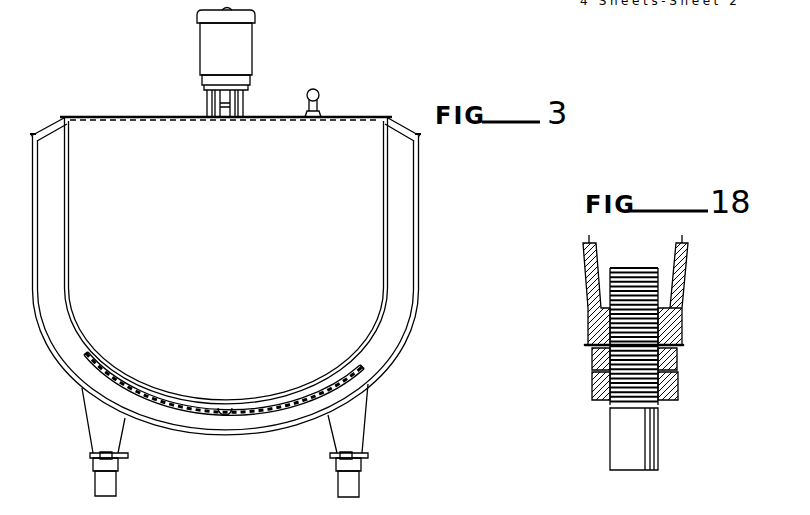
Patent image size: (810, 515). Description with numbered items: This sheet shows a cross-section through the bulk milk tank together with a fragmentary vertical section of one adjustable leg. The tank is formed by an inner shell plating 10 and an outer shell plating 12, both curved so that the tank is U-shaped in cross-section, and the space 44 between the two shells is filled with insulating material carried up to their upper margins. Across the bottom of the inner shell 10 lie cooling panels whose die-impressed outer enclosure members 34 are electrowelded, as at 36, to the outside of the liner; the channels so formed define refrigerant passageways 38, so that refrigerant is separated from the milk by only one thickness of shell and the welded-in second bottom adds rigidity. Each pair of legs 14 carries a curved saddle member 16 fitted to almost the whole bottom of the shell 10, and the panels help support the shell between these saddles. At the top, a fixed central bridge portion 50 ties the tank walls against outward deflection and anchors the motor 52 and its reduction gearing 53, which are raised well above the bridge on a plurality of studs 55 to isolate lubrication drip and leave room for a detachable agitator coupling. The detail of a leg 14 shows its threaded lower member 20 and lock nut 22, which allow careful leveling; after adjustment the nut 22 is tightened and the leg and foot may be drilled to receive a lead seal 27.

In FIG. 3, the inner shell plating 10 is at (382, 301).
In FIG. 3, the outer shell plating 12 is at (418, 310).
In FIG. 3, the leg 14 is at (355, 416).
In FIG. 18, the leg 14 is at (679, 326).
In FIG. 3, the saddle member 16 is at (283, 405).
In FIG. 3, the threaded lower member 20 is at (352, 491).
In FIG. 18, the threaded lower member 20 is at (637, 442).
In FIG. 3, the lock nut 22 is at (352, 464).
In FIG. 18, the lock nut 22 is at (680, 380).
In FIG. 3, the lead seal 27 is at (93, 456).
In FIG. 18, the lead seal 27 is at (585, 346).
In FIG. 3, the outer enclosure member 34 is at (249, 413).
In FIG. 3, the electroweld 36 is at (191, 401).
In FIG. 3, the passageway 38 is at (210, 413).
In FIG. 3, the space 44 is at (398, 258).
In FIG. 3, the bridge portion 50 is at (336, 117).
In FIG. 3, the motor 52 is at (211, 59).
In FIG. 3, the reduction gearing 53 is at (251, 76).
In FIG. 3, the studs 55 is at (209, 106).